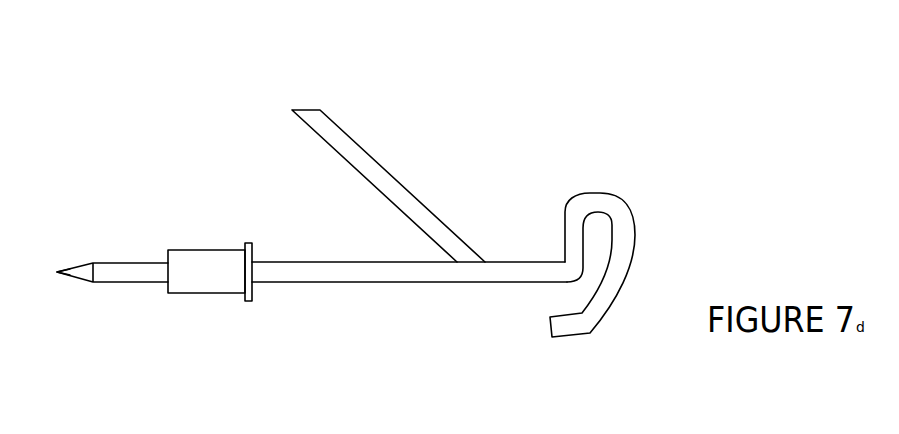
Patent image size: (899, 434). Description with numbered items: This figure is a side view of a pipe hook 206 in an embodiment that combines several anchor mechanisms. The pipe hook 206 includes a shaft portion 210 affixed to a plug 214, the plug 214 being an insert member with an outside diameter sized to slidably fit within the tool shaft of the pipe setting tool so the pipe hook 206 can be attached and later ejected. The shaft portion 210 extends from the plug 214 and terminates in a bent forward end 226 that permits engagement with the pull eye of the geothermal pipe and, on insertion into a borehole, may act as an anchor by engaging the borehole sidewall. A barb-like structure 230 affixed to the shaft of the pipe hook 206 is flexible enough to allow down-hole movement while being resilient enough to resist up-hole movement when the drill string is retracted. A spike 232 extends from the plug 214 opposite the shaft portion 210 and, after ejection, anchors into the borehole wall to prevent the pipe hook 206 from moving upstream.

The pipe hook 206 is at (456, 117).
The shaft portion 210 is at (407, 272).
The plug 214 is at (192, 287).
The bent forward end 226 is at (622, 238).
The barb-like structure 230 is at (346, 147).
The spike 232 is at (124, 274).